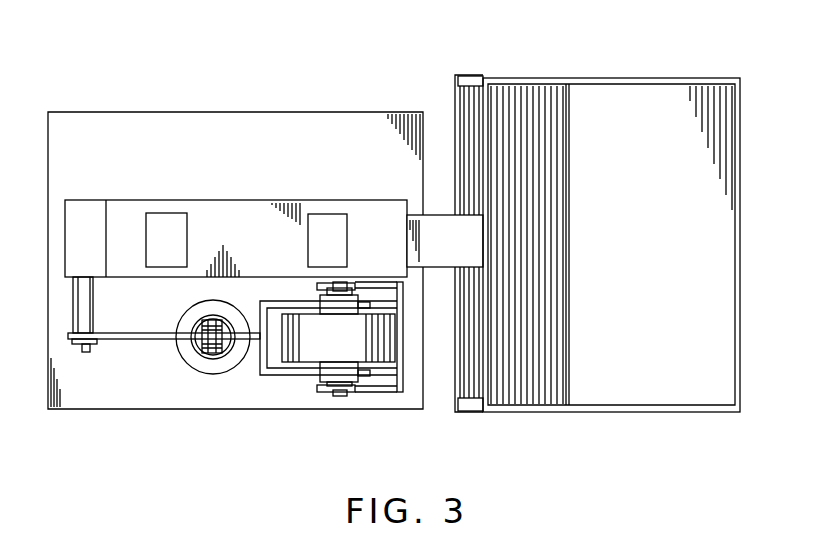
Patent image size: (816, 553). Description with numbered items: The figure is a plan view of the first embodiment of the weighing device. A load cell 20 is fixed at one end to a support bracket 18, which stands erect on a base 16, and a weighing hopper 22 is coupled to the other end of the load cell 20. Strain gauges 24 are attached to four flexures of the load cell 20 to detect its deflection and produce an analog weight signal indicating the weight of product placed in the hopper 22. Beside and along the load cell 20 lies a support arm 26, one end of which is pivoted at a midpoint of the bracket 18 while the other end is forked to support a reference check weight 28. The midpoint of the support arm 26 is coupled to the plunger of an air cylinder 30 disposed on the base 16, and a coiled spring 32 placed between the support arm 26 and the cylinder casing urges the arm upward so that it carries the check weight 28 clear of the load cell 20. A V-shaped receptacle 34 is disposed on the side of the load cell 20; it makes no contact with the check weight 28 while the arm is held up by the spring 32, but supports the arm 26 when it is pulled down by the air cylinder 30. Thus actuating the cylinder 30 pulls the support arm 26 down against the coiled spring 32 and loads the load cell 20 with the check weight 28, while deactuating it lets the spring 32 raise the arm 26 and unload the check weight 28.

The base 16 is at (270, 112).
The support bracket 18 is at (96, 207).
The load cell 20 is at (249, 185).
The weighing hopper 22 is at (612, 79).
The strain gauges 24 is at (176, 216).
The support arm 26 is at (155, 341).
The reference check weight 28 is at (304, 352).
The air cylinder 30 is at (206, 390).
The coiled spring 32 is at (193, 322).
The V-shaped receptacle 34 is at (381, 396).